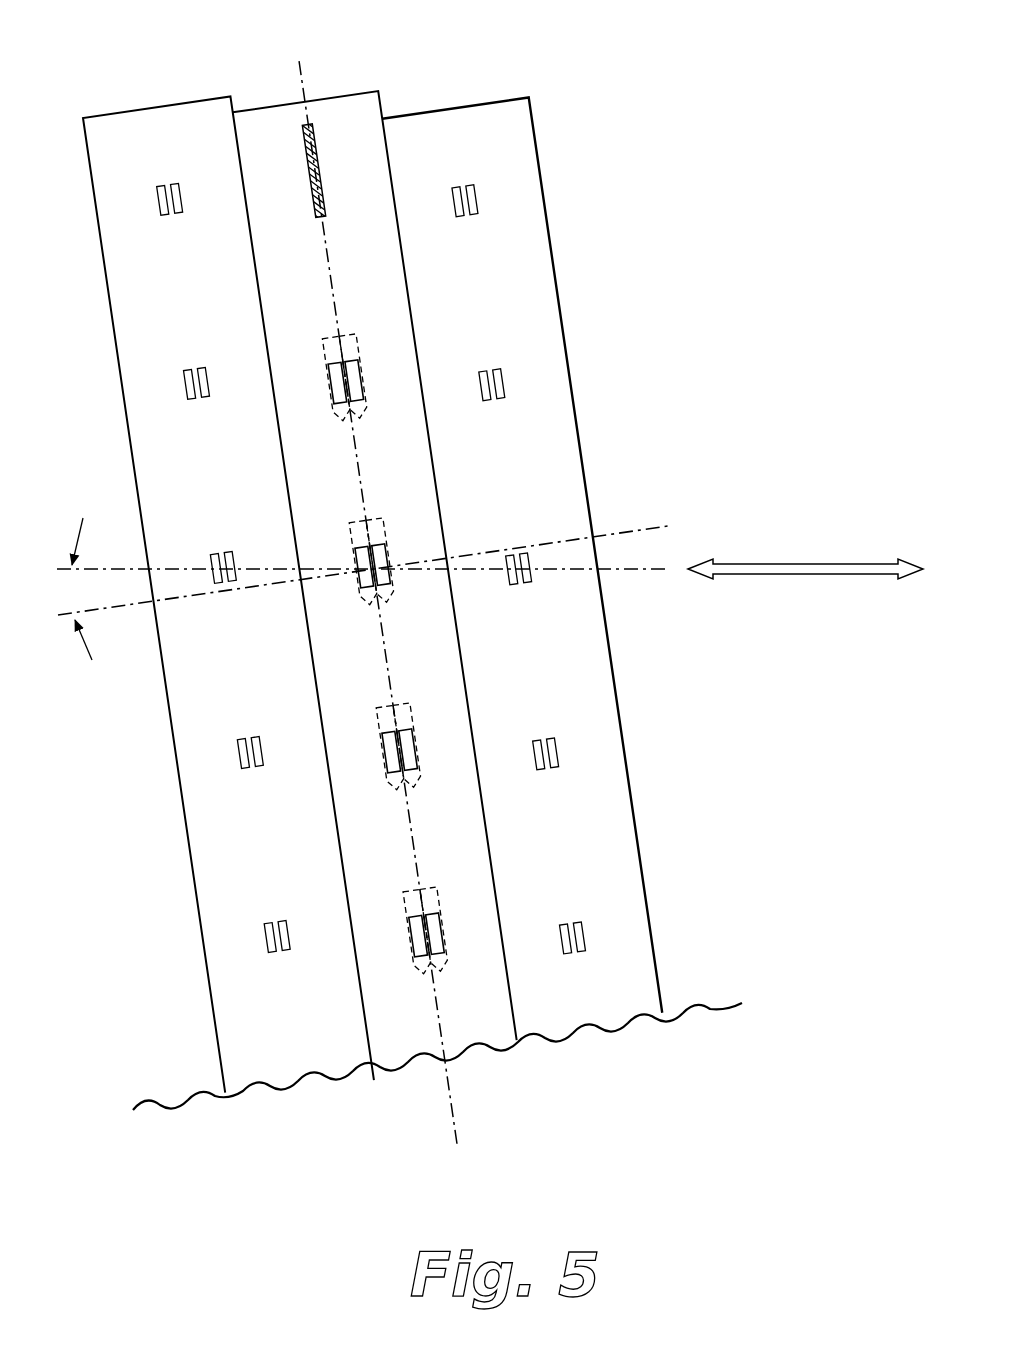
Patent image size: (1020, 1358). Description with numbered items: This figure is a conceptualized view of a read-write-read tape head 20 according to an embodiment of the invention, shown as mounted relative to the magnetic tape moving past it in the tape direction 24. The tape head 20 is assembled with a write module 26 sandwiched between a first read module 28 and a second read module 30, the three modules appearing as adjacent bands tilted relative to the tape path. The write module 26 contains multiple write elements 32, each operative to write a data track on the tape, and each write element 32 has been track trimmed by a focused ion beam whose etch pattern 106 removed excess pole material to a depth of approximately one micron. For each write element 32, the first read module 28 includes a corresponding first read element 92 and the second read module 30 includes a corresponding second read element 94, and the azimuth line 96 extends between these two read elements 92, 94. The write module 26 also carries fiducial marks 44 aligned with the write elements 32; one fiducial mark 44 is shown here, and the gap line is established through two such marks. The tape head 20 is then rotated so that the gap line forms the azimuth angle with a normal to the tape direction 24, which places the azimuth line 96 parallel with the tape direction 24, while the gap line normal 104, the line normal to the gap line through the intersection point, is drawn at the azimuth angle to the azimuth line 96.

The tape head 20 is at (645, 108).
The tape direction 24 is at (837, 576).
The write module 26 is at (337, 97).
The first read module 28 is at (150, 108).
The second read module 30 is at (485, 103).
The write element 32 is at (345, 522).
The fiducial mark 44 is at (300, 142).
The first read element 92 is at (216, 548).
The second read element 94 is at (510, 550).
The azimuth line 96 is at (650, 573).
The gap line normal 104 is at (86, 645).
The etch pattern 106 is at (173, 600).